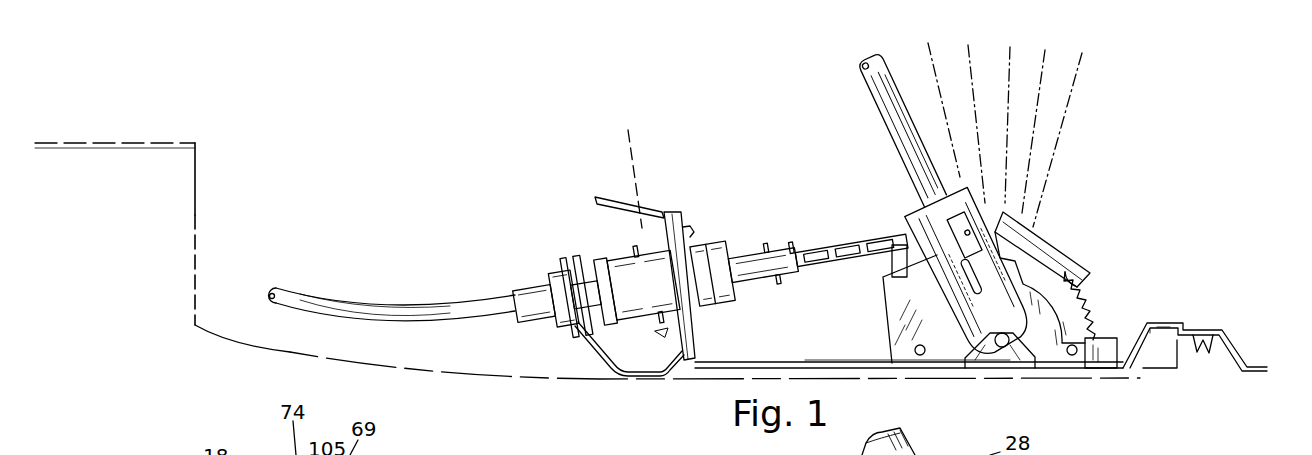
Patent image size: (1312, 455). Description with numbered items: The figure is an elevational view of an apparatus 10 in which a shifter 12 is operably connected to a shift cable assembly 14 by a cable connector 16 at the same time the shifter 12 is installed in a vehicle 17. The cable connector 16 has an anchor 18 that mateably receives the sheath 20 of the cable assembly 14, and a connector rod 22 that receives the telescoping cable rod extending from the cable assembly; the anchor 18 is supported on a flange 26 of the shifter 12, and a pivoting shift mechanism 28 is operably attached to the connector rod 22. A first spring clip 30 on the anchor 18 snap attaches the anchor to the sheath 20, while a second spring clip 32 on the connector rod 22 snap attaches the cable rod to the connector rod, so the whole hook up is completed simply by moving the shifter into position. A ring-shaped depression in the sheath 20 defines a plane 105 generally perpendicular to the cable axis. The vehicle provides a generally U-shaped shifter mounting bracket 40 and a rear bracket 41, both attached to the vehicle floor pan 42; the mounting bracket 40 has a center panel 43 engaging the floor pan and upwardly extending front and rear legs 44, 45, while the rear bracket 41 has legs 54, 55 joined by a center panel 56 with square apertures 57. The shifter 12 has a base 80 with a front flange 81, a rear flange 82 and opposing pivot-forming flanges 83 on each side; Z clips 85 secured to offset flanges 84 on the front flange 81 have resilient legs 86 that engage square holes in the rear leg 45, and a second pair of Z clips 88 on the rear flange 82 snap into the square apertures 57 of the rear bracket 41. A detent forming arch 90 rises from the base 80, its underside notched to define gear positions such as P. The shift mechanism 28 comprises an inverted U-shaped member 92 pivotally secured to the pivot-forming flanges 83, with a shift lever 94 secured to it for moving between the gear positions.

The apparatus 10 is at (1168, 126).
The shifter 12 is at (1104, 280).
The shift cable assembly 14 is at (428, 300).
The cable connector 16 is at (657, 160).
The vehicle 17 is at (200, 139).
The anchor 18 is at (608, 262).
The sheath 20 is at (532, 291).
The connector rod 22 is at (789, 246).
The flange 26 is at (610, 197).
The pivoting shift mechanism 28 is at (869, 106).
The first spring clip 30 is at (646, 248).
The second spring clip 32 is at (780, 274).
The shifter mounting bracket 40 is at (601, 362).
The rear bracket 41 is at (1238, 370).
The vehicle floor pan 42 is at (490, 379).
The center panel 43 is at (647, 378).
The front leg 44 is at (578, 331).
The rear leg 45 is at (662, 378).
The leg 54 is at (1178, 369).
The leg 55 is at (1246, 360).
The center panel 56 is at (1222, 343).
The square apertures 57 is at (1213, 322).
The base 80 is at (853, 372).
The front flange 81 is at (703, 355).
The rear flange 82 is at (1157, 321).
The pivot-forming flanges 83 is at (1025, 362).
The offset flanges 84 is at (696, 345).
The Z clips 85 is at (668, 341).
The resilient legs 86 is at (655, 332).
The Z clips 88 is at (1208, 354).
The detent forming arch 90 is at (1034, 262).
The inverted U-shaped member 92 is at (910, 227).
The shift lever 94 is at (903, 85).
The plane 105 is at (629, 140).
The gear position P is at (865, 46).